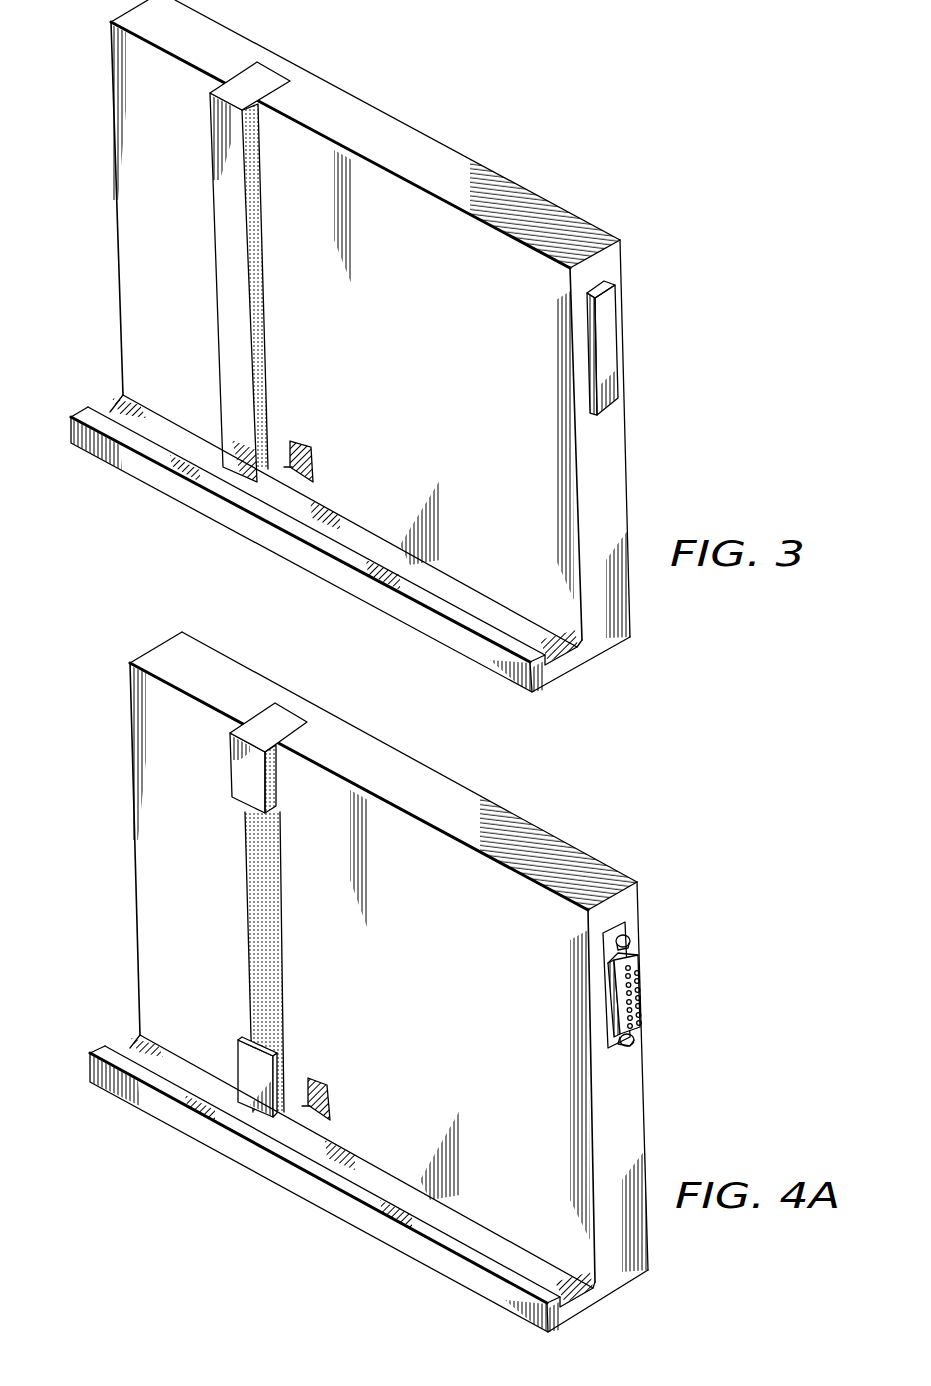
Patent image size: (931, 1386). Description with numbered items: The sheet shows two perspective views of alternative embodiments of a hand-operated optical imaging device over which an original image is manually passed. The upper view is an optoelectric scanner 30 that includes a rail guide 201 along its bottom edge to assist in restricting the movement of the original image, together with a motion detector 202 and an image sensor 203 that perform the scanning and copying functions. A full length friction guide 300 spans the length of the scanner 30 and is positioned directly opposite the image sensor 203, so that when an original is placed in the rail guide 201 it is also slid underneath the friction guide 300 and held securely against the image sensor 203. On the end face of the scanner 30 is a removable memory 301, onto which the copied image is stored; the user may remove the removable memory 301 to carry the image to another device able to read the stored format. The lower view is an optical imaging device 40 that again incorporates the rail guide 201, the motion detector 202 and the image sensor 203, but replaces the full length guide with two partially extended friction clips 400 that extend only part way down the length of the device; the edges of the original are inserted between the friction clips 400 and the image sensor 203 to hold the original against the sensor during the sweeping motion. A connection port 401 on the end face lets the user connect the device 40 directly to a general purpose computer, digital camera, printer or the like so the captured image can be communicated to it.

In FIG. 3, the optoelectric scanner 30 is at (84, 189).
In FIG. 3, the friction guide 300 is at (224, 277).
In FIG. 3, the image sensor 203 is at (264, 334).
In FIG. 4A, the image sensor 203 is at (252, 912).
In FIG. 3, the motion detector 202 is at (300, 440).
In FIG. 4A, the motion detector 202 is at (313, 1079).
In FIG. 3, the removable memory 301 is at (607, 350).
In FIG. 3, the rail guide 201 is at (557, 670).
In FIG. 4A, the rail guide 201 is at (570, 1308).
In FIG. 4A, the optical imaging device 40 is at (104, 826).
In FIG. 4A, the friction clips 400 is at (237, 768).
In FIG. 4A, the connection port 401 is at (640, 1023).